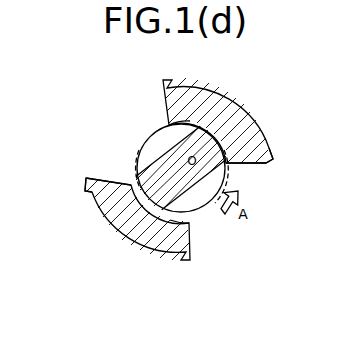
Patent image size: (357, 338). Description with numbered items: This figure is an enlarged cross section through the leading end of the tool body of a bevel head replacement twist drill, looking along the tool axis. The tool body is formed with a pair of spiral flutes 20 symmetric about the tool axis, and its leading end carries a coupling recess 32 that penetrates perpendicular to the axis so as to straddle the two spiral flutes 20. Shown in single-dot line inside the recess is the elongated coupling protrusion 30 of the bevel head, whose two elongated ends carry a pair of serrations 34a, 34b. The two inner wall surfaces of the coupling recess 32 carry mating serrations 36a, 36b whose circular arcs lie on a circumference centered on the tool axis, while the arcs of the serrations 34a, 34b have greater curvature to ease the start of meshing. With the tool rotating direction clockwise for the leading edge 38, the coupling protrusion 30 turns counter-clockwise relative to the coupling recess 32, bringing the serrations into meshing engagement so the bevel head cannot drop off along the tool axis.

The spiral flutes 20 is at (103, 176).
The coupling protrusion 30 is at (224, 96).
The coupling recess 32 is at (147, 121).
The serration 34a is at (245, 118).
The serration 34b is at (111, 228).
The serration 36a is at (180, 125).
The serration 36b is at (182, 217).
The leading edge 38 is at (88, 171).